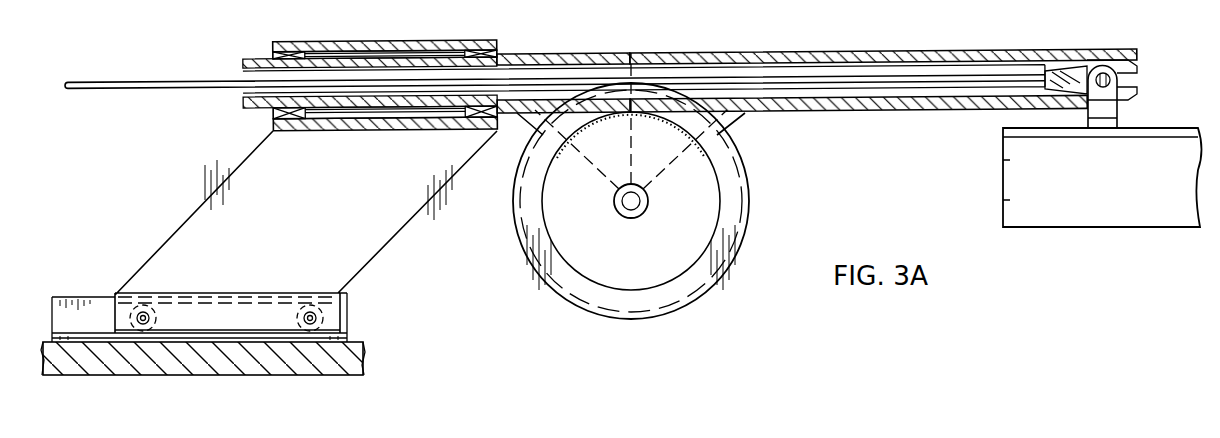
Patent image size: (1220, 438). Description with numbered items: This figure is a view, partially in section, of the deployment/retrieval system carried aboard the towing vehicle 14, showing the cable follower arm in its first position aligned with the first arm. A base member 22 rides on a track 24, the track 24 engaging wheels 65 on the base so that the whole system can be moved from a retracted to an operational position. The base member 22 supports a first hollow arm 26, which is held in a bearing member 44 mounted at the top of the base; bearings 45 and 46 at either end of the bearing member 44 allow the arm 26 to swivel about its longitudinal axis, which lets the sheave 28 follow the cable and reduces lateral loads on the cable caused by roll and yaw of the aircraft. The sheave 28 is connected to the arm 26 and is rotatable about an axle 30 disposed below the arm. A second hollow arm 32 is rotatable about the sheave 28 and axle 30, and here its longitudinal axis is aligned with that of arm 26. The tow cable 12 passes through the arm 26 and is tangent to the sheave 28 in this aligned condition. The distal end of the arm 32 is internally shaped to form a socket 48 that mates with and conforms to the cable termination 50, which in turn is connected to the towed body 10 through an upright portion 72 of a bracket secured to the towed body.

The towed body 10 is at (1013, 183).
The tow cable 12 is at (153, 86).
The towing vehicle 14 is at (194, 375).
The base member 22 is at (186, 222).
The track 24 is at (60, 297).
The first hollow arm 26 is at (558, 53).
The sheave 28 is at (676, 308).
The axle 30 is at (636, 201).
The second hollow arm 32 is at (801, 52).
The bearing member 44 is at (371, 41).
The bearing 45 is at (288, 50).
The bearing 46 is at (477, 40).
The socket 48 is at (1061, 72).
The cable termination 50 is at (1073, 73).
The wheels 65 is at (158, 312).
The upright portion 72 is at (1112, 106).